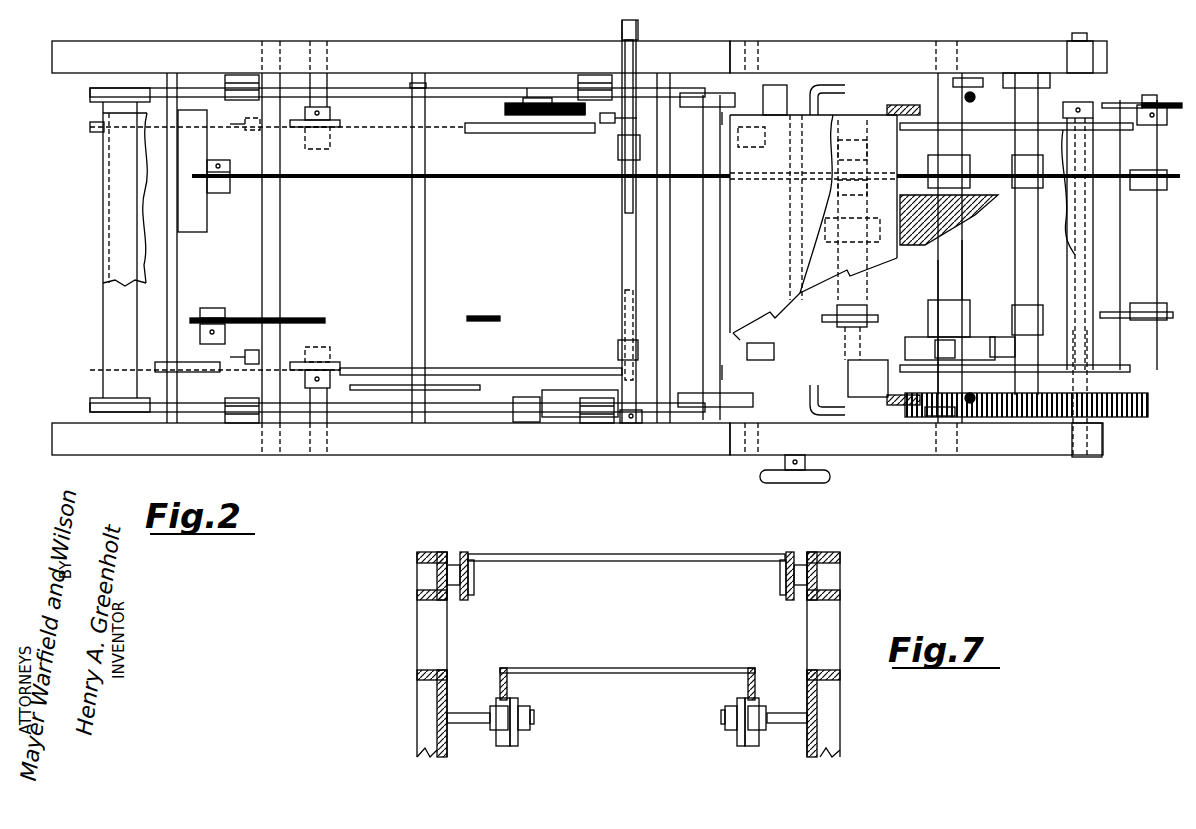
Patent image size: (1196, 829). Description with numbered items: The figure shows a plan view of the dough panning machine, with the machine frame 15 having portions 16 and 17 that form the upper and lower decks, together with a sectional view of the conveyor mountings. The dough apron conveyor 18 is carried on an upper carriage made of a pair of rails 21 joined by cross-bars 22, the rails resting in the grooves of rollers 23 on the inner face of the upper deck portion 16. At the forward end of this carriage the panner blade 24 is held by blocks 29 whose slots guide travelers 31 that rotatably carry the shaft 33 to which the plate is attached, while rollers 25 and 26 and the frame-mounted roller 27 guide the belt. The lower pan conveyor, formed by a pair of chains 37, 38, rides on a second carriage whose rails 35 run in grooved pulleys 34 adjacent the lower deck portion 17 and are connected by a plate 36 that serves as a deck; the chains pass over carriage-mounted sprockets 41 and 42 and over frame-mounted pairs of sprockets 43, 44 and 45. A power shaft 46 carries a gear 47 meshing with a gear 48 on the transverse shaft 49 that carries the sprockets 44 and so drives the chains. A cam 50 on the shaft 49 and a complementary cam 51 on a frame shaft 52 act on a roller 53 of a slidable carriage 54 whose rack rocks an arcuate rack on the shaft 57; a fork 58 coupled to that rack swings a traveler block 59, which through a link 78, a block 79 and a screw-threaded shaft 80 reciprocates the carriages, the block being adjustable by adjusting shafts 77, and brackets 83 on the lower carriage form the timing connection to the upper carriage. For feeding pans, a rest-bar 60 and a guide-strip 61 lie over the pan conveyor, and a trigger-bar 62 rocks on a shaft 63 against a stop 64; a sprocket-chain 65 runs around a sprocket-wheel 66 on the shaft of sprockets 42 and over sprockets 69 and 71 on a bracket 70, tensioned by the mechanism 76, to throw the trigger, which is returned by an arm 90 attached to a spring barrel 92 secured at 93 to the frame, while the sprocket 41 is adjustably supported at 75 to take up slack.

In FIG. 7, the frame 15 is at (417, 750).
In FIG. 2, the upper deck portion 16 is at (358, 50).
In FIG. 7, the upper deck portion 16 is at (428, 552).
In FIG. 2, the lower deck portion 17 is at (870, 50).
In FIG. 7, the lower deck portion 17 is at (417, 674).
In FIG. 2, the dough apron conveyor 18 is at (104, 212).
In FIG. 2, the rails 21 is at (457, 88).
In FIG. 7, the rails 21 is at (464, 552).
In FIG. 2, the cross-bars 22 is at (168, 300).
In FIG. 7, the cross-bars 22 is at (620, 554).
In FIG. 2, the rollers 23 is at (243, 82).
In FIG. 7, the rollers 23 is at (478, 598).
In FIG. 2, the panner blade 24 is at (813, 224).
In FIG. 2, the roller 25 is at (705, 306).
In FIG. 2, the roller 26 is at (115, 336).
In FIG. 2, the roller 27 is at (192, 234).
In FIG. 2, the blocks 29 is at (690, 95).
In FIG. 2, the travelers 31 is at (722, 118).
In FIG. 2, the shaft 33 is at (736, 332).
In FIG. 2, the grooved pulleys 34 is at (332, 128).
In FIG. 7, the grooved pulleys 34 is at (512, 740).
In FIG. 2, the rails 35 is at (482, 135).
In FIG. 7, the rails 35 is at (500, 680).
In FIG. 7, the plate 36 is at (643, 668).
In FIG. 2, the chain 37 is at (300, 318).
In FIG. 2, the chain 38 is at (560, 178).
In FIG. 2, the sprockets 41 is at (232, 180).
In FIG. 2, the sprockets 42 is at (1130, 192).
In FIG. 2, the sprockets 43 is at (1040, 185).
In FIG. 2, the sprockets 44 is at (975, 175).
In FIG. 2, the sprockets 45 is at (868, 145).
In FIG. 2, the power shaft 46 is at (835, 235).
In FIG. 2, the gear 47 is at (938, 258).
In FIG. 2, the gear 48 is at (985, 208).
In FIG. 2, the shaft 49 is at (963, 256).
In FIG. 2, the cam 50 is at (905, 352).
In FIG. 2, the complementary cam 51 is at (1118, 415).
In FIG. 2, the shaft 52 is at (1080, 252).
In FIG. 2, the roller 53 is at (1015, 418).
In FIG. 2, the carriage 54 is at (1000, 336).
In FIG. 2, the shaft 57 is at (938, 288).
In FIG. 2, the fork 58 is at (978, 86).
In FIG. 2, the traveler block 59 is at (946, 60).
In FIG. 2, the rest-bar 60 is at (281, 235).
In FIG. 2, the guide-strip 61 is at (482, 387).
In FIG. 2, the trigger-bar 62 is at (624, 258).
In FIG. 2, the shaft 63 is at (618, 362).
In FIG. 2, the stop 64 is at (630, 228).
In FIG. 2, the sprocket-chain 65 is at (565, 116).
In FIG. 2, the sprocket-wheel 66 is at (1170, 102).
In FIG. 2, the sprocket 69 is at (527, 88).
In FIG. 2, the bracket 70 is at (506, 108).
In FIG. 2, the sprocket 71 is at (535, 116).
In FIG. 2, the adjustable support 75 is at (262, 128).
In FIG. 2, the adjusting mechanism 76 is at (605, 123).
In FIG. 2, the adjusting shafts 77 is at (973, 101).
In FIG. 2, the link 78 is at (897, 104).
In FIG. 2, the block 79 is at (865, 110).
In FIG. 2, the screw-threaded shaft 80 is at (822, 85).
In FIG. 2, the brackets 83 is at (765, 85).
In FIG. 2, the arm 90 is at (642, 420).
In FIG. 2, the spring barrel 92 is at (560, 418).
In FIG. 2, the casing attachment 93 is at (518, 422).